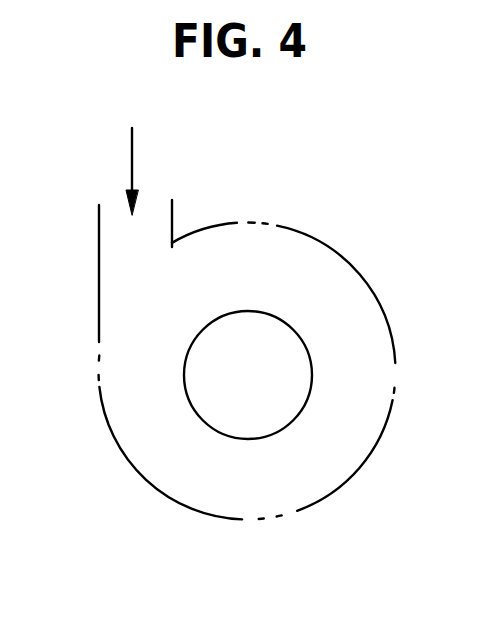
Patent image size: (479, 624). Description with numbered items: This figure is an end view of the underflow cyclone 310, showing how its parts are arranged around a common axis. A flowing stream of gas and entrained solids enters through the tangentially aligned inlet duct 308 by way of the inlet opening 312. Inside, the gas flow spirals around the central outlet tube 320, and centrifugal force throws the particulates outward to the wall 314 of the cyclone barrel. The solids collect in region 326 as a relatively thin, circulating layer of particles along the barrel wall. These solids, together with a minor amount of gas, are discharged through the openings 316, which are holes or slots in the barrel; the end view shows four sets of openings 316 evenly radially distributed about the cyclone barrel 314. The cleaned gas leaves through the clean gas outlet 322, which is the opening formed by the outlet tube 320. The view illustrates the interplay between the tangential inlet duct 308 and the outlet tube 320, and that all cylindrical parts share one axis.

The tangentially aligned inlet duct 308 is at (97, 222).
The cyclone 310 is at (400, 291).
The inlet opening 312 is at (155, 205).
The cyclone barrel wall 314 is at (373, 452).
The openings 316 is at (278, 223).
The outlet tube 320 is at (238, 312).
The clean gas outlet 322 is at (272, 367).
The solids collection region 326 is at (315, 493).